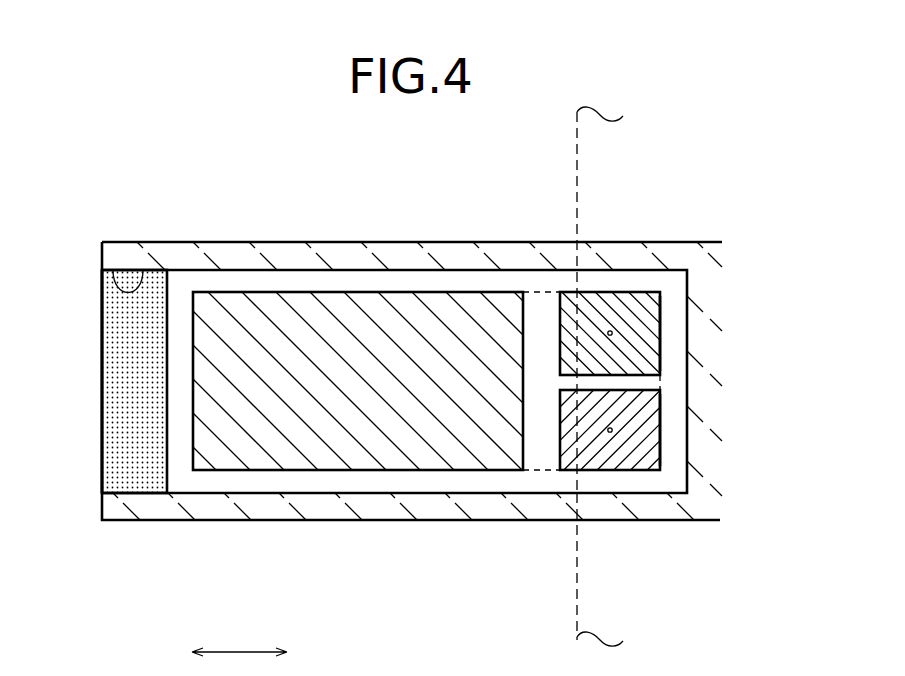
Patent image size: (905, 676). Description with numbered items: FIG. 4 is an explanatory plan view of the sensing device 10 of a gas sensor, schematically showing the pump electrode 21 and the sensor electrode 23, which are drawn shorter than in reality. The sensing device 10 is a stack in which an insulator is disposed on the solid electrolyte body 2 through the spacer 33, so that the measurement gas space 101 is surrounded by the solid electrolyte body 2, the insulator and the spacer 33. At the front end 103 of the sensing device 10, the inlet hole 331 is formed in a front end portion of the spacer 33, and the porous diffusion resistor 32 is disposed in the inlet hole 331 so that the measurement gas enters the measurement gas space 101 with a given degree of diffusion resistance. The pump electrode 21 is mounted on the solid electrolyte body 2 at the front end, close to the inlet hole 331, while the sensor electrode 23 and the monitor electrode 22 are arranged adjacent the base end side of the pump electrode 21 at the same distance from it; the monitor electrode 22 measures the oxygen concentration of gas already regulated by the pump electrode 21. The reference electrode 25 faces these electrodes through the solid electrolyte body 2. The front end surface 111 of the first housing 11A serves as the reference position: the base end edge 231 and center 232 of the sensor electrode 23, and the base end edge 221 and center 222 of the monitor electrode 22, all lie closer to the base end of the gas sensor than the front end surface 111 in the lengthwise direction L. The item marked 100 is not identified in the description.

The solid electrolyte body 2 is at (673, 300).
The sensing device 10 is at (687, 543).
The first housing 11A is at (603, 158).
The pump electrode 21 is at (315, 325).
The monitor electrode 22 is at (583, 455).
The sensor electrode 23 is at (590, 318).
The reference electrode 25 is at (548, 337).
The diffusion resistor 32 is at (138, 475).
The spacer 33 is at (220, 508).
The sensor device 100 is at (310, 543).
The measurement gas space 101 is at (360, 476).
The front end 103 is at (100, 420).
The front end surface 111 is at (573, 598).
The base end edge 221 is at (660, 433).
The center 222 is at (612, 430).
The base end edge 231 is at (660, 323).
The center 232 is at (612, 333).
The inlet hole 331 is at (117, 288).